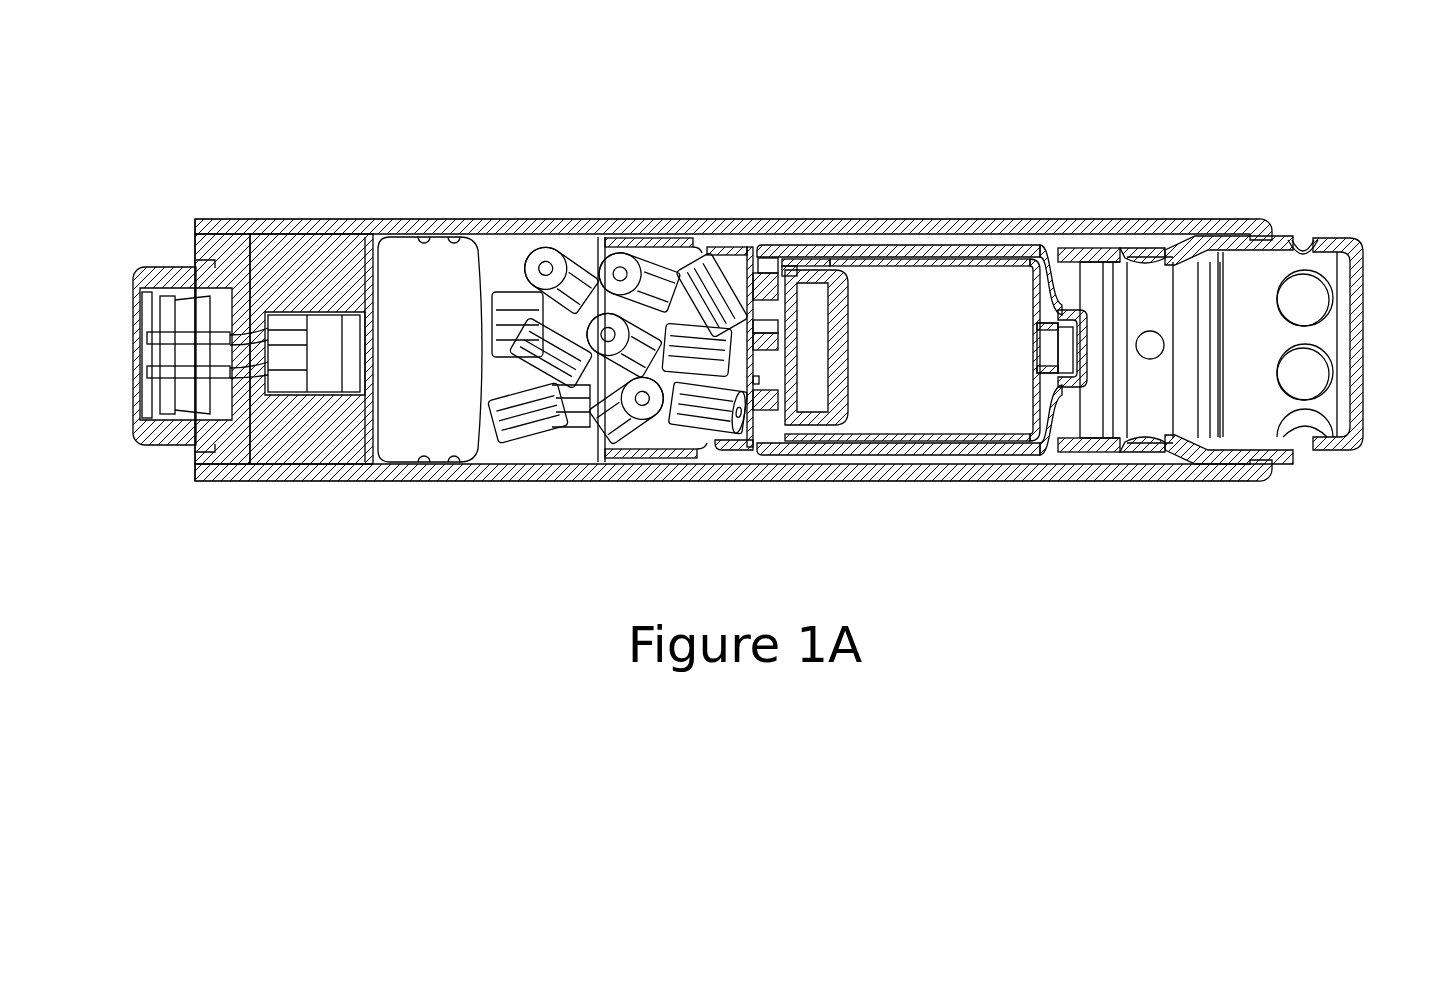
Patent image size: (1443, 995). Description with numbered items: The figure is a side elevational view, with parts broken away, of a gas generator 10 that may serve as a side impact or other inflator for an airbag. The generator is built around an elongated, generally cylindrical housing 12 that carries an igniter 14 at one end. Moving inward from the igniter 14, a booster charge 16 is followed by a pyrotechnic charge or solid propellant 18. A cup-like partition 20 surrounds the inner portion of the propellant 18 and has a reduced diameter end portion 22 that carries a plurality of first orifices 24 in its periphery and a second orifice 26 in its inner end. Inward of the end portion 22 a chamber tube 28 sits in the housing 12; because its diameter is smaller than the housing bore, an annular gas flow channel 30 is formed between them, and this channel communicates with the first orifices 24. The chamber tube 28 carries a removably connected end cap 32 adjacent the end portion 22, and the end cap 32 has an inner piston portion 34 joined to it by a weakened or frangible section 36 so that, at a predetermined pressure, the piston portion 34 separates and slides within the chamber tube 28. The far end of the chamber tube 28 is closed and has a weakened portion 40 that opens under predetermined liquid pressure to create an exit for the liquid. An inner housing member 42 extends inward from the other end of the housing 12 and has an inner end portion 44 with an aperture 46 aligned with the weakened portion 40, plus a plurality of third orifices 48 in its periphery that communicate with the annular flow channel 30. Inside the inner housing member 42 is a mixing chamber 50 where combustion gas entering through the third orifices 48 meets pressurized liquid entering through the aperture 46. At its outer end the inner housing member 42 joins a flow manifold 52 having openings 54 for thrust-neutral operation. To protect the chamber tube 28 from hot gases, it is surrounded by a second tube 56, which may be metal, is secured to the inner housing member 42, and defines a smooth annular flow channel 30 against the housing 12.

The gas generator 10 is at (408, 116).
The housing 12 is at (496, 222).
The igniter 14 is at (150, 266).
The booster charge 16 is at (410, 445).
The pyrotechnic charge or solid propellant 18 is at (527, 435).
The cup-like partition 20 is at (667, 238).
The reduced diameter end portion 22 is at (758, 247).
The first orifices 24 is at (704, 247).
The second orifice 26 is at (755, 382).
The chamber tube 28 is at (912, 442).
The annular gas flow channel 30 is at (942, 237).
The end cap 32 is at (762, 455).
The inner piston portion 34 is at (847, 322).
The weakened or frangible section 36 is at (791, 280).
The weakened portion 40 is at (1037, 348).
The inner housing member 42 is at (1205, 464).
The inner end portion 44 is at (1053, 436).
The aperture 46 is at (1077, 347).
The third orifices 48 is at (1168, 255).
The mixing chamber 50 is at (1147, 330).
The flow manifold 52 is at (1363, 366).
The openings 54 is at (1312, 297).
The second tube 56 is at (1015, 250).